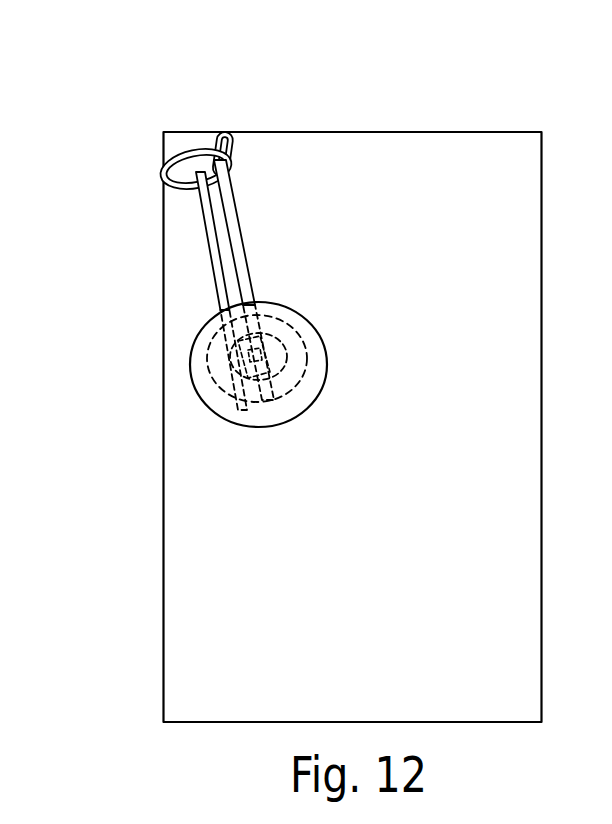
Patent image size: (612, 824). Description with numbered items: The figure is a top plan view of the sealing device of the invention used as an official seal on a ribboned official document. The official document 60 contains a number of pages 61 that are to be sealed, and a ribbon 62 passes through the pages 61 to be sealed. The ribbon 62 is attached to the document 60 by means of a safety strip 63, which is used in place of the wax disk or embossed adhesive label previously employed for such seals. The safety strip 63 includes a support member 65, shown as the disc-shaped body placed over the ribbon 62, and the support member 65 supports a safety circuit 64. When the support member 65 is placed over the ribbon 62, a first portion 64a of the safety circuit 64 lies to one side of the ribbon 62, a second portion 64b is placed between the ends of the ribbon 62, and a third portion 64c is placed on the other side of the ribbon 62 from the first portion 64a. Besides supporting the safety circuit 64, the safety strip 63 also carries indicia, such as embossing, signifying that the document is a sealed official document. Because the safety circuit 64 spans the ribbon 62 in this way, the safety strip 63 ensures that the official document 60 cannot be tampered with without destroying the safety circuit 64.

The official document 60 is at (147, 160).
The pages 61 is at (176, 325).
The ribbon 62 is at (225, 143).
The safety strip 63 is at (269, 314).
The safety circuit 64 is at (280, 382).
The first portion 64a is at (207, 383).
The second portion 64b is at (257, 413).
The third portion 64c is at (302, 388).
The support member 65 is at (304, 317).